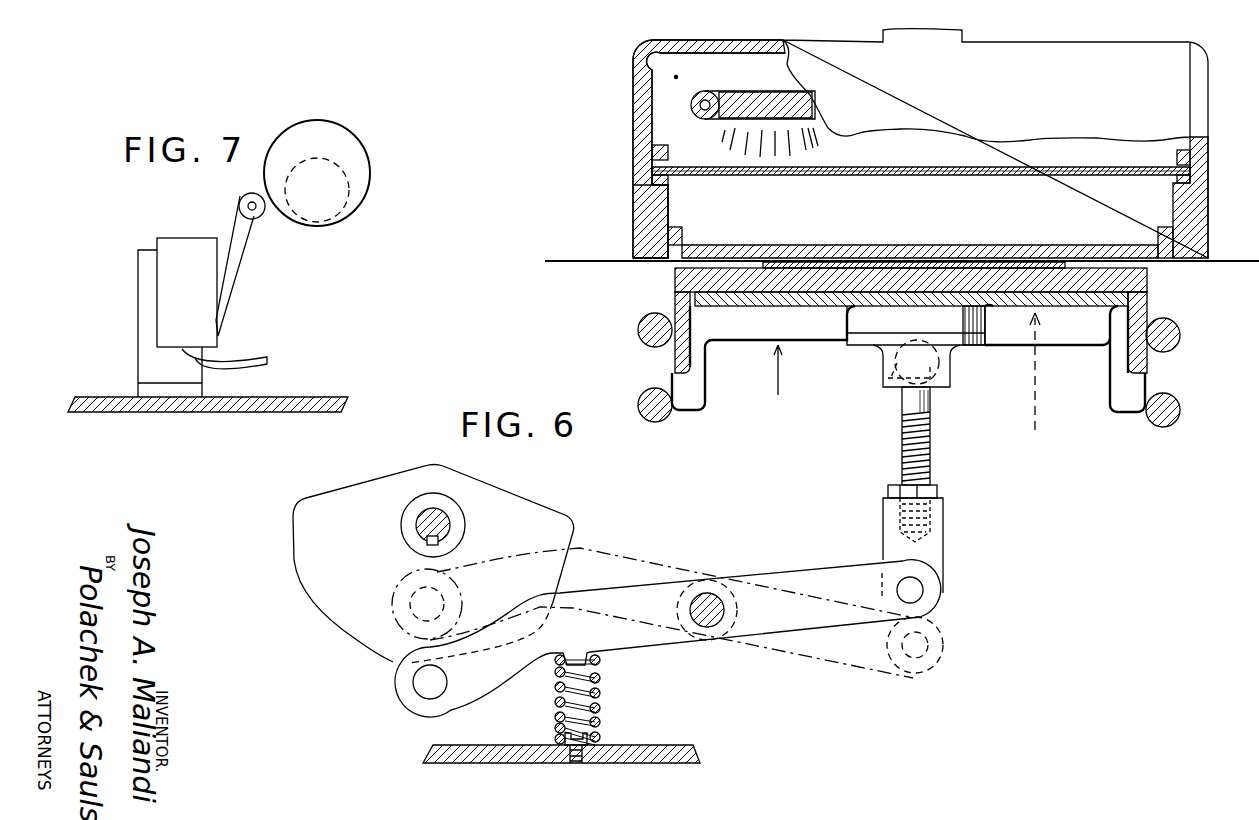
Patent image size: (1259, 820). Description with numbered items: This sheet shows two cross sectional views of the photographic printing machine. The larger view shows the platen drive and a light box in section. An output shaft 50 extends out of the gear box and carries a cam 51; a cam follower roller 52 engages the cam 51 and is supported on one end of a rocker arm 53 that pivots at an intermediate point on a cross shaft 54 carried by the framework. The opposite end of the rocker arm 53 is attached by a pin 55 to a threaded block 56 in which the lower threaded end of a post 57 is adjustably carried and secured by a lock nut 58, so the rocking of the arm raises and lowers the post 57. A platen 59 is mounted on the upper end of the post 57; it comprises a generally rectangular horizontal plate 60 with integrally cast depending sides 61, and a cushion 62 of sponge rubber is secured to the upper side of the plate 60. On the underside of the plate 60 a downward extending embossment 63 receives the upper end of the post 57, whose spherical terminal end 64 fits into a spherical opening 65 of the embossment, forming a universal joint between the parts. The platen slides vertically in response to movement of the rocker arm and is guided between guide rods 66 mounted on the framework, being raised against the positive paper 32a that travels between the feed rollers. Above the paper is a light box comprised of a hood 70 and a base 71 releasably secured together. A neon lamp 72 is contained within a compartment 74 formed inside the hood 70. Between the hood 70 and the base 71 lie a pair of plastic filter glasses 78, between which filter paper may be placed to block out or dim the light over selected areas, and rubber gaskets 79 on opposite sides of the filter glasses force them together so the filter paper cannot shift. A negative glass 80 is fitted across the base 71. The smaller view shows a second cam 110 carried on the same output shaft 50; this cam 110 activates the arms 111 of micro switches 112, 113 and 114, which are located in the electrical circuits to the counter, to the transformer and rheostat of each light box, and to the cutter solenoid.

In FIG. 6, the paper 32a is at (603, 260).
In FIG. 6, the output shaft 50 is at (450, 525).
In FIG. 6, the cam 51 is at (346, 549).
In FIG. 6, the cam follower roller 52 is at (415, 690).
In FIG. 6, the rocker arm 53 is at (785, 571).
In FIG. 6, the cross shaft 54 is at (710, 593).
In FIG. 6, the pin 55 is at (923, 592).
In FIG. 6, the threaded block 56 is at (943, 546).
In FIG. 6, the post 57 is at (930, 453).
In FIG. 6, the lock nut 58 is at (937, 490).
In FIG. 6, the platen 59 is at (777, 370).
In FIG. 6, the horizontal plate 60 is at (822, 307).
In FIG. 6, the depending sides 61 is at (675, 306).
In FIG. 6, the cushion 62 is at (715, 278).
In FIG. 6, the embossment 63 is at (865, 336).
In FIG. 6, the spherical terminal end 64 is at (938, 370).
In FIG. 6, the spherical opening 65 is at (880, 392).
In FIG. 6, the guide rods 66 is at (638, 335).
In FIG. 6, the hood 70 is at (633, 56).
In FIG. 6, the base 71 is at (633, 208).
In FIG. 6, the neon lamp 72 is at (797, 104).
In FIG. 6, the compartment 74 is at (676, 78).
In FIG. 6, the filter glasses 78 is at (892, 195).
In FIG. 6, the rubber gaskets 79 is at (668, 161).
In FIG. 6, the negative glass 80 is at (830, 245).
In FIG. 7, the cam 110 is at (355, 128).
In FIG. 7, the arms 111 is at (236, 243).
In FIG. 7, the micro switch 112 is at (90, 336).
In FIG. 7, the micro switch 113 is at (172, 299).
In FIG. 7, the micro switch 114 is at (155, 339).